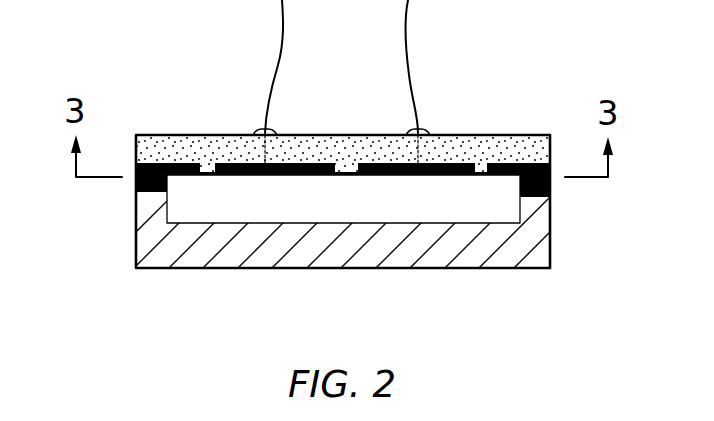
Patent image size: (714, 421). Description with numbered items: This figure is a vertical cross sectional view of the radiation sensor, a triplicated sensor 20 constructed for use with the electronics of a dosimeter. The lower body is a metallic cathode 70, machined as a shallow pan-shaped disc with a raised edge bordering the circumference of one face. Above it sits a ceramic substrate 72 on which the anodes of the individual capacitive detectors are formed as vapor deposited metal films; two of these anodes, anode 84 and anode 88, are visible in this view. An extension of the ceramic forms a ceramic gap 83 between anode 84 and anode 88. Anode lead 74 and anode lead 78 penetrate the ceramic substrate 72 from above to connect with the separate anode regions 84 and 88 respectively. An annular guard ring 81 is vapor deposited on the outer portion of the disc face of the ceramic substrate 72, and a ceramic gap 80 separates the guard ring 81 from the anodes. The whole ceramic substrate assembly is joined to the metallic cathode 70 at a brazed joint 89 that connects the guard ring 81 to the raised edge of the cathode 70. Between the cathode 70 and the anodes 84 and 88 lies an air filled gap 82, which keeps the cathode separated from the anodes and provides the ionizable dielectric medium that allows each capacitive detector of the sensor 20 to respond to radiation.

The triplicated sensor 20 is at (395, 276).
The metallic cathode 70 is at (552, 238).
The ceramic substrate 72 is at (180, 152).
The anode lead 74 is at (282, 27).
The anode lead 78 is at (405, 30).
The ceramic gap 80 is at (480, 177).
The annular guard ring 81 is at (552, 170).
The air filled gap 82 is at (281, 200).
The ceramic gap 83 is at (343, 177).
The anode 84 is at (238, 177).
The anode 88 is at (438, 177).
The brazed joint 89 is at (552, 187).